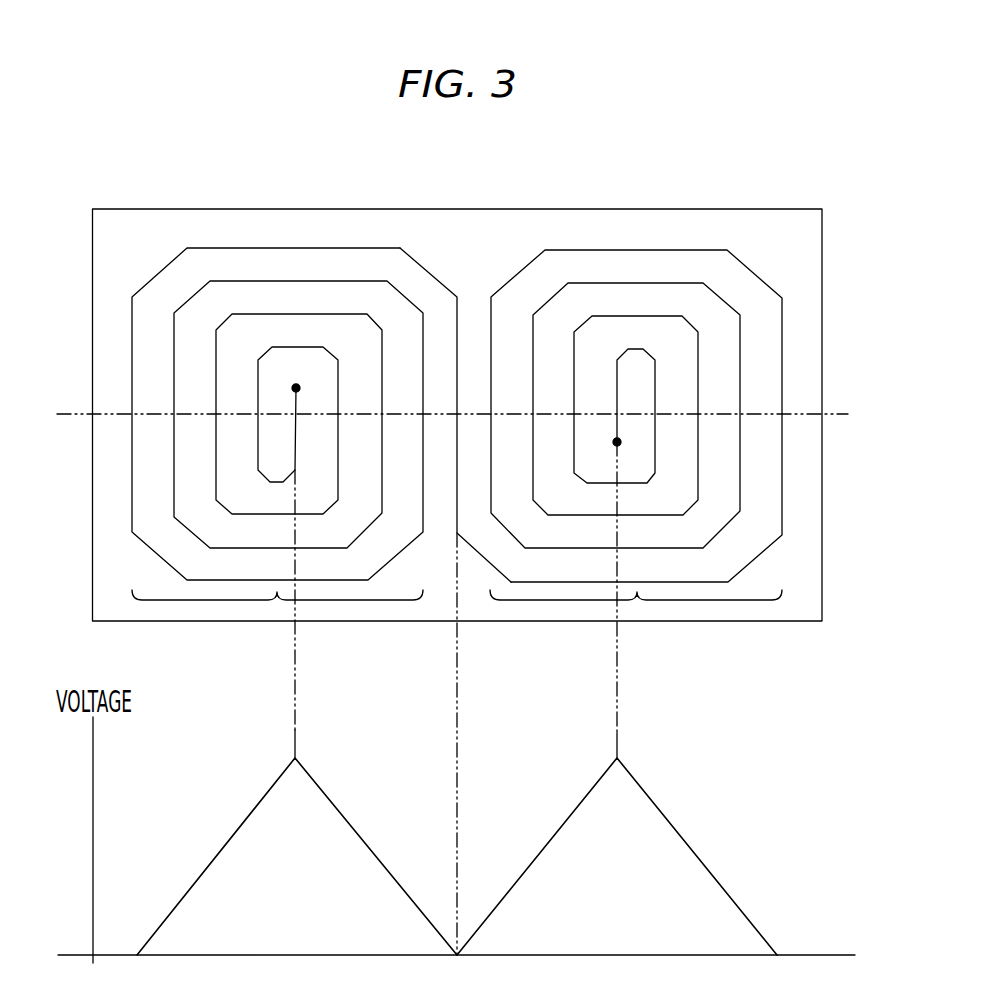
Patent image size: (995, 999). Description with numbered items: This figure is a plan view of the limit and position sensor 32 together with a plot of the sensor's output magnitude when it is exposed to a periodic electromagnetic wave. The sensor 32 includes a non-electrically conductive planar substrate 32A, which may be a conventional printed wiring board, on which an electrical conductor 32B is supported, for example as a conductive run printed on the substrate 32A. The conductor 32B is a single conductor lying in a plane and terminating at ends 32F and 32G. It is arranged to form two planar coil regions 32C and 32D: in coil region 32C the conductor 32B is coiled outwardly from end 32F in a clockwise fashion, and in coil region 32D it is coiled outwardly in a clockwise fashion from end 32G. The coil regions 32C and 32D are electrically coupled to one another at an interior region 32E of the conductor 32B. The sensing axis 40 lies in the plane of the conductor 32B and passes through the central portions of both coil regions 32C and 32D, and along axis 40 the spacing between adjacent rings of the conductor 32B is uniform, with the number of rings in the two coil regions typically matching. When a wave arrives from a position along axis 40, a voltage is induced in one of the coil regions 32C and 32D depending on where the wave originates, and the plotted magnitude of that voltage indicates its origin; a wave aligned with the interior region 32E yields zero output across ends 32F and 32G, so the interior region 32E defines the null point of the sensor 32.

The limit and position sensor 32 is at (820, 188).
The planar substrate 32A is at (151, 226).
The electrical conductor 32B is at (305, 248).
The coil region 32C is at (280, 598).
The coil region 32D is at (636, 600).
The interior region 32E is at (460, 312).
The end 32F is at (294, 388).
The end 32G is at (619, 442).
The sensing axis 40 is at (848, 414).